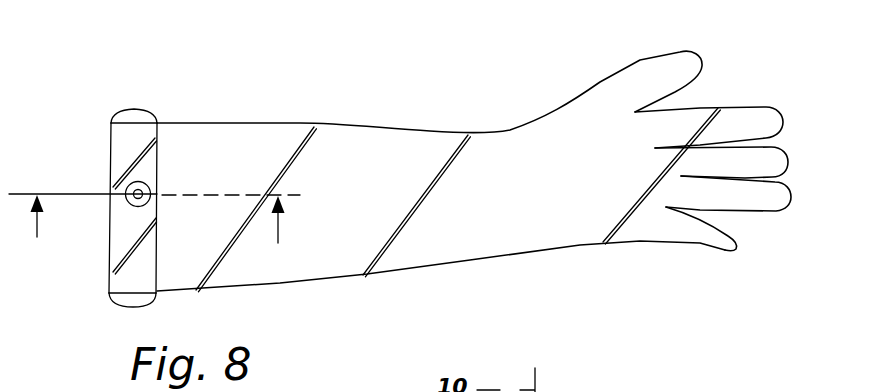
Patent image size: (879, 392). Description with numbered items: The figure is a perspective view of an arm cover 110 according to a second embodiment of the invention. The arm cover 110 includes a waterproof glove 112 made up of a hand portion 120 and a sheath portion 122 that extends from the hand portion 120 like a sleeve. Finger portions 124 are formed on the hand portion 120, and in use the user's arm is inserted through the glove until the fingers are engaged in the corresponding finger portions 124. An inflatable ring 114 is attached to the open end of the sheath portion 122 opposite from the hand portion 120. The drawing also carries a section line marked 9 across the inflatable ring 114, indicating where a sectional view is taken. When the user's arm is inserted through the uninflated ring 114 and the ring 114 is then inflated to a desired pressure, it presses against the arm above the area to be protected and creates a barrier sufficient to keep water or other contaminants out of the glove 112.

The arm cover 110 is at (358, 100).
The waterproof glove 112 is at (396, 142).
The inflatable ring 114 is at (131, 110).
The hand portion 120 is at (566, 231).
The sheath portion 122 is at (341, 262).
The finger portions 124 is at (764, 118).
The section line 9- 9 is at (154, 238).